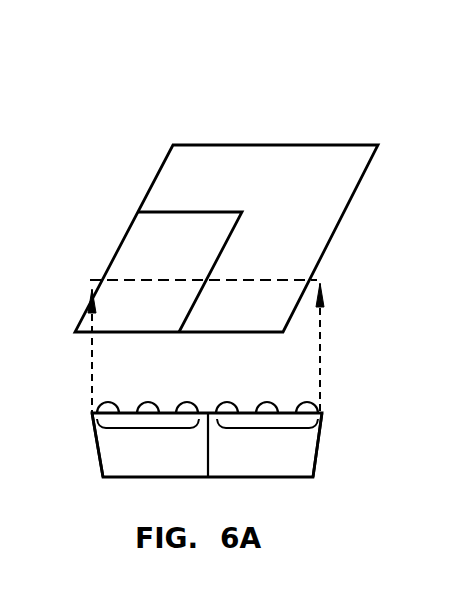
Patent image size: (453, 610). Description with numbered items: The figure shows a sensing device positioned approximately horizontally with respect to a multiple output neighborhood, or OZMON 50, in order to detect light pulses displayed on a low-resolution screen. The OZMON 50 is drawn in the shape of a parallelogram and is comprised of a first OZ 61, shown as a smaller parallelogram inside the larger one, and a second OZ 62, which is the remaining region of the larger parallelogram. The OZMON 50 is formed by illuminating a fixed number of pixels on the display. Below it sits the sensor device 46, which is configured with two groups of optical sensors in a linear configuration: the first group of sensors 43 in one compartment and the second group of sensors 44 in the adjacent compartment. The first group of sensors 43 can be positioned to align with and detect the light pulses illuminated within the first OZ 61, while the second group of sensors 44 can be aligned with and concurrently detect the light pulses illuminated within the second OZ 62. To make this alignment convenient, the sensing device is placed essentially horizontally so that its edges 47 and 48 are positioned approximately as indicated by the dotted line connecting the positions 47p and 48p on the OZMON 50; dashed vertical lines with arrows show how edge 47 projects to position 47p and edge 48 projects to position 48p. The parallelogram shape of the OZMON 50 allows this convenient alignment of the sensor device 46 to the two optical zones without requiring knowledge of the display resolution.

The multiple output neighborhood (OZMON) 50 is at (246, 116).
The second OZ 62 is at (327, 162).
The first OZ 61 is at (193, 222).
The position 47' 47p is at (92, 243).
The position 48' 48p is at (376, 248).
The sensor device 46 is at (323, 450).
The first group of sensors 43 is at (155, 430).
The second group of sensors 44 is at (268, 430).
The edge of the sensing device 47 is at (92, 413).
The edge of the sensing device 48 is at (322, 413).